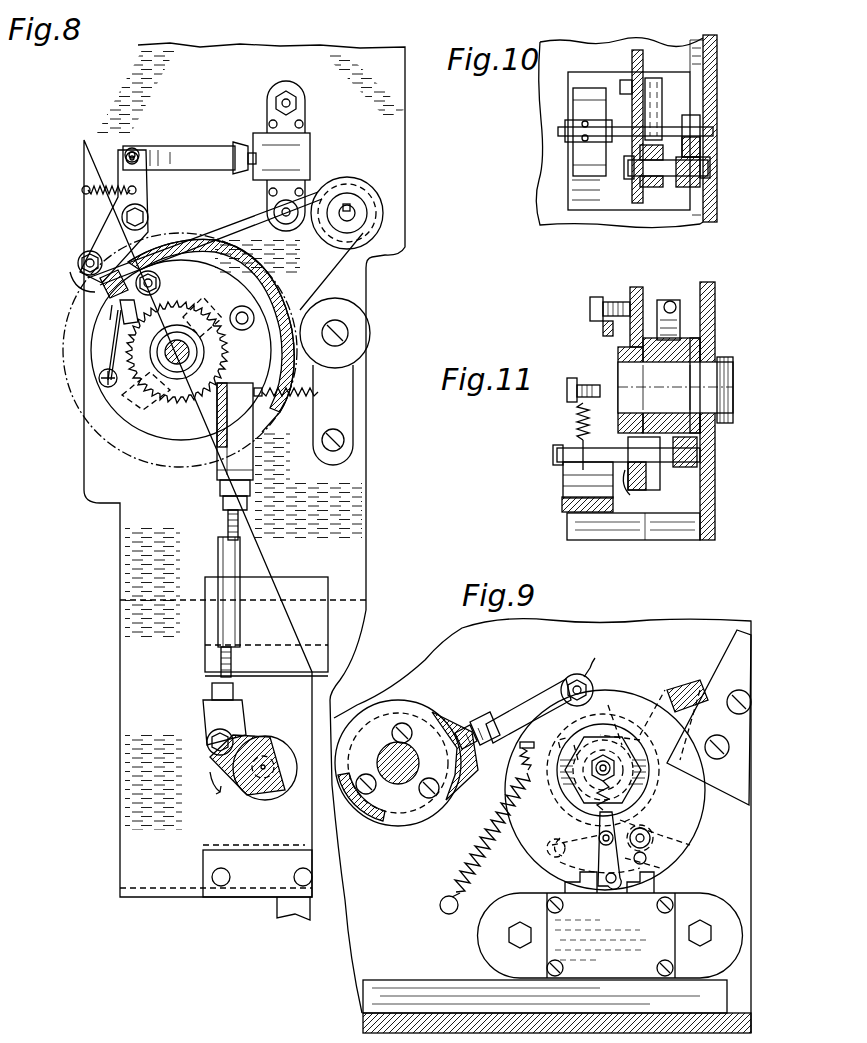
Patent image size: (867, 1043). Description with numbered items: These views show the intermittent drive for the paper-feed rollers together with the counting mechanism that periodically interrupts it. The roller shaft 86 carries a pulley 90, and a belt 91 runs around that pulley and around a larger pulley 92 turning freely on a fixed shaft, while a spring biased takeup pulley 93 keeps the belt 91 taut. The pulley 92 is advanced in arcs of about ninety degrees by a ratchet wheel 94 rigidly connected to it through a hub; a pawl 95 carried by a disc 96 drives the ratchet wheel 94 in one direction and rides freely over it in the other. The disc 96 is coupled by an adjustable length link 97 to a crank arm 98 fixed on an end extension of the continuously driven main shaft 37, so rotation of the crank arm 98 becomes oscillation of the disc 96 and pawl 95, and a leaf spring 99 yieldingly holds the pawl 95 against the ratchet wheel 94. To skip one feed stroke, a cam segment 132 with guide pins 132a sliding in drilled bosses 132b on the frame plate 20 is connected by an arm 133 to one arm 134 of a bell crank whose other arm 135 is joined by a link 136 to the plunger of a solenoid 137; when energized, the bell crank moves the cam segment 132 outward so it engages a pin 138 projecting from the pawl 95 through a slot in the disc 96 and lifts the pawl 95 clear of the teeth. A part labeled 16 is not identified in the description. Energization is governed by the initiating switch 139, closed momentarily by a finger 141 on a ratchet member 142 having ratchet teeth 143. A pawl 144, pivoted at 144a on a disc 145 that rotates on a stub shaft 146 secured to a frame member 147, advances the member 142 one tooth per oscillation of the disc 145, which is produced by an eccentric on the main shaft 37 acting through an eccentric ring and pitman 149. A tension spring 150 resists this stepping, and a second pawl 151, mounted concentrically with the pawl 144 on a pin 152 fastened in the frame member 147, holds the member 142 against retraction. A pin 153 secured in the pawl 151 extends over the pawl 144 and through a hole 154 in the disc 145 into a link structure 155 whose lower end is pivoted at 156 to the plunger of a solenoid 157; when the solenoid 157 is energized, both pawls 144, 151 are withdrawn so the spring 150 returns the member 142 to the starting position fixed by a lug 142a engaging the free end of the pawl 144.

In FIG. 8, the ratchet wheel hub 16 is at (185, 380).
In FIG. 8, the frame plate 20 is at (120, 537).
In FIG. 8, the main shaft 37 is at (272, 760).
In FIG. 9, the main shaft 37 is at (420, 755).
In FIG. 8, the shaft 86 is at (352, 208).
In FIG. 8, the pulley 90 is at (350, 178).
In FIG. 8, the belt 91 is at (202, 227).
In FIG. 8, the larger pulley 92 is at (278, 308).
In FIG. 8, the spring biased takeup pulley 93 is at (362, 333).
In FIG. 8, the ratchet wheel 94 is at (170, 398).
In FIG. 8, the pawl 95 is at (128, 284).
In FIG. 8, the disc 96 is at (148, 430).
In FIG. 8, the adjustable length link 97 is at (240, 552).
In FIG. 8, the crank arm 98 is at (236, 735).
In FIG. 8, the leaf spring 99 is at (114, 335).
In FIG. 8, the cam segment 132 is at (175, 296).
In FIG. 8, the guide pins 132a is at (220, 345).
In FIG. 8, the drilled bosses 132b is at (258, 300).
In FIG. 8, the arm 133 is at (80, 295).
In FIG. 8, the bell crank arm 134 is at (95, 247).
In FIG. 8, the bell crank arm 135 is at (140, 180).
In FIG. 8, the link 136 is at (170, 152).
In FIG. 8, the solenoid 137 is at (300, 140).
In FIG. 8, the pin 138 is at (118, 318).
In FIG. 11, the switch 139 is at (690, 305).
In FIG. 9, the switch 139 is at (684, 720).
In FIG. 11, the finger 141 is at (665, 300).
In FIG. 9, the finger 141 is at (590, 668).
In FIG. 11, the ratchet member 142 is at (690, 340).
In FIG. 9, the ratchet member 142 is at (622, 712).
In FIG. 9, the lug 142a is at (580, 812).
In FIG. 11, the ratchet teeth 143 is at (668, 440).
In FIG. 9, the ratchet teeth 143 is at (638, 800).
In FIG. 10, the pawl 144 is at (657, 120).
In FIG. 11, the pawl 144 is at (663, 450).
In FIG. 9, the pawl 144 is at (596, 826).
In FIG. 10, the pivot 144a is at (669, 177).
In FIG. 9, the pivot 144a is at (668, 855).
In FIG. 10, the disc 145 is at (642, 50).
In FIG. 11, the disc 145 is at (638, 287).
In FIG. 9, the disc 145 is at (632, 690).
In FIG. 11, the stub shaft 146 is at (622, 372).
In FIG. 9, the stub shaft 146 is at (640, 775).
In FIG. 10, the frame member 147 is at (712, 190).
In FIG. 11, the frame member 147 is at (712, 468).
In FIG. 9, the frame member 147 is at (706, 625).
In FIG. 11, the eccentric ring and pitman 149 is at (600, 297).
In FIG. 9, the eccentric ring and pitman 149 is at (525, 722).
In FIG. 9, the tension spring 150 is at (470, 852).
In FIG. 10, the second pawl 151 is at (690, 118).
In FIG. 11, the second pawl 151 is at (690, 445).
In FIG. 9, the second pawl 151 is at (690, 832).
In FIG. 10, the pin 152 is at (696, 165).
In FIG. 10, the pin 153 is at (634, 150).
In FIG. 11, the pin 153 is at (575, 450).
In FIG. 9, the pin 153 is at (592, 840).
In FIG. 10, the hole 154 is at (620, 140).
In FIG. 11, the hole 154 is at (634, 490).
In FIG. 10, the link structure 155 is at (570, 140).
In FIG. 11, the link structure 155 is at (565, 480).
In FIG. 9, the link structure 155 is at (592, 861).
In FIG. 11, the pivot 156 is at (565, 505).
In FIG. 9, the pivot 156 is at (609, 955).
In FIG. 10, the solenoid 157 is at (575, 185).
In FIG. 11, the solenoid 157 is at (570, 527).
In FIG. 9, the solenoid 157 is at (590, 978).